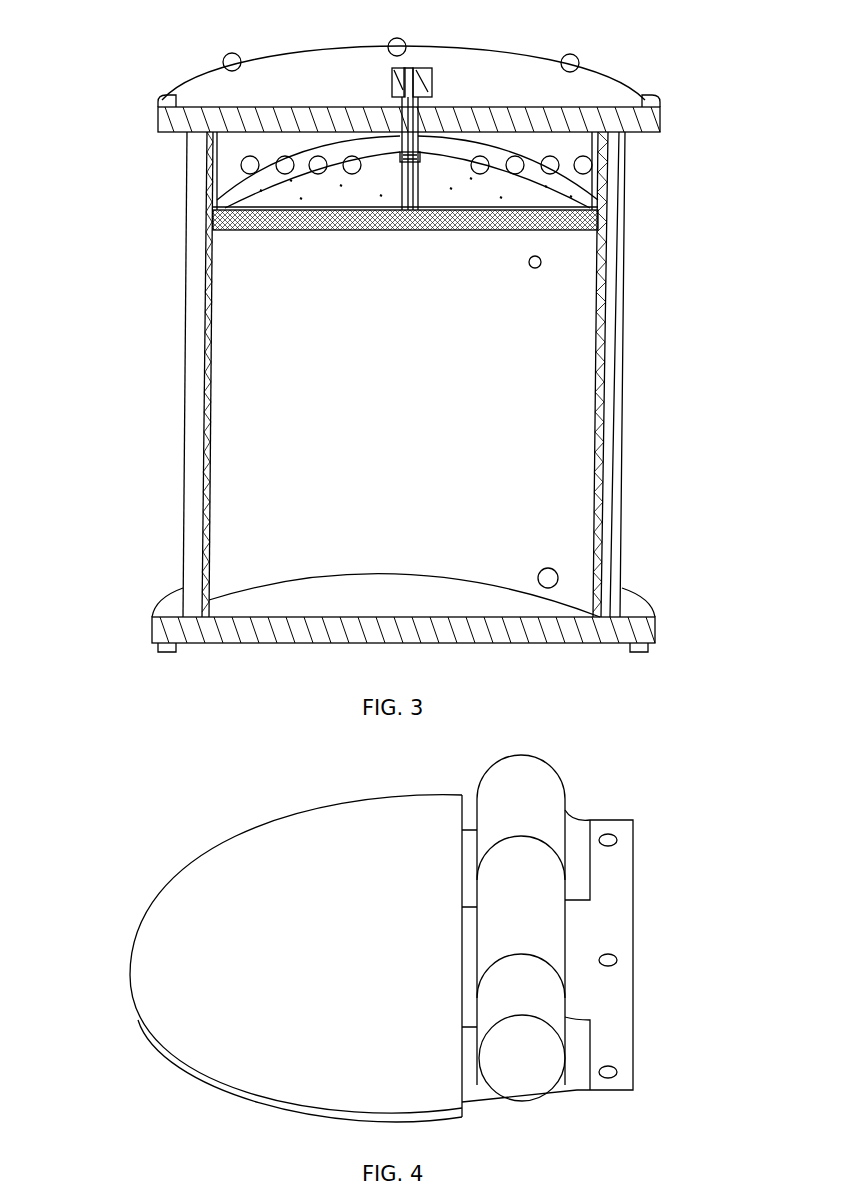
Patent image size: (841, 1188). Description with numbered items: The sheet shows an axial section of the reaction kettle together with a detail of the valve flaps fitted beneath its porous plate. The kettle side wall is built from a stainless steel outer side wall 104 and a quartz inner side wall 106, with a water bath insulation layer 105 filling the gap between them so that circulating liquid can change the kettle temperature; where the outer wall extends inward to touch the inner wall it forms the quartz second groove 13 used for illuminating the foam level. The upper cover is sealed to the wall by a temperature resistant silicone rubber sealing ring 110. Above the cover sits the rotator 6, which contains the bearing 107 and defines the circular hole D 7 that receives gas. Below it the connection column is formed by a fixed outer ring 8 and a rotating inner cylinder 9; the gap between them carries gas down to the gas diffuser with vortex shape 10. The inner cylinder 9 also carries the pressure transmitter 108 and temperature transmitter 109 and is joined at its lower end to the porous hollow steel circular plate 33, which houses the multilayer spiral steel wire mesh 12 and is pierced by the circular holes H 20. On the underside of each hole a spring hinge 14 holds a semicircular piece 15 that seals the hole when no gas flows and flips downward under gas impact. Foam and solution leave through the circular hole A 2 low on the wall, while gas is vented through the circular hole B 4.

In FIG. 3, the circular hole A 2 is at (552, 575).
In FIG. 3, the circular hole B 4 is at (541, 262).
In FIG. 3, the rotator 6 is at (430, 80).
In FIG. 3, the circular hole D 7 is at (412, 70).
In FIG. 3, the outer ring 8 is at (420, 115).
In FIG. 3, the inner cylinder 9 is at (402, 120).
In FIG. 3, the gas diffuser with vortex shape 10 is at (300, 152).
In FIG. 3, the multilayer spiral steel wire mesh 12 is at (230, 220).
In FIG. 3, the second groove 13 is at (207, 312).
In FIG. 3, the circular hole H 20 is at (575, 194).
In FIG. 3, the porous hollow steel circular plate 33 is at (580, 203).
In FIG. 3, the outer side wall 104 is at (185, 337).
In FIG. 3, the water bath insulation layer 105 is at (195, 375).
In FIG. 3, the inner side wall 106 is at (562, 368).
In FIG. 3, the bearing 107 is at (407, 90).
In FIG. 3, the pressure transmitter 108 is at (413, 153).
In FIG. 3, the temperature transmitter 109 is at (413, 160).
In FIG. 3, the temperature resistant silicone rubber sealing ring 110 is at (210, 130).
In FIG. 4, the spring hinge 14 is at (533, 902).
In FIG. 4, the semicircular piece 15 is at (232, 920).